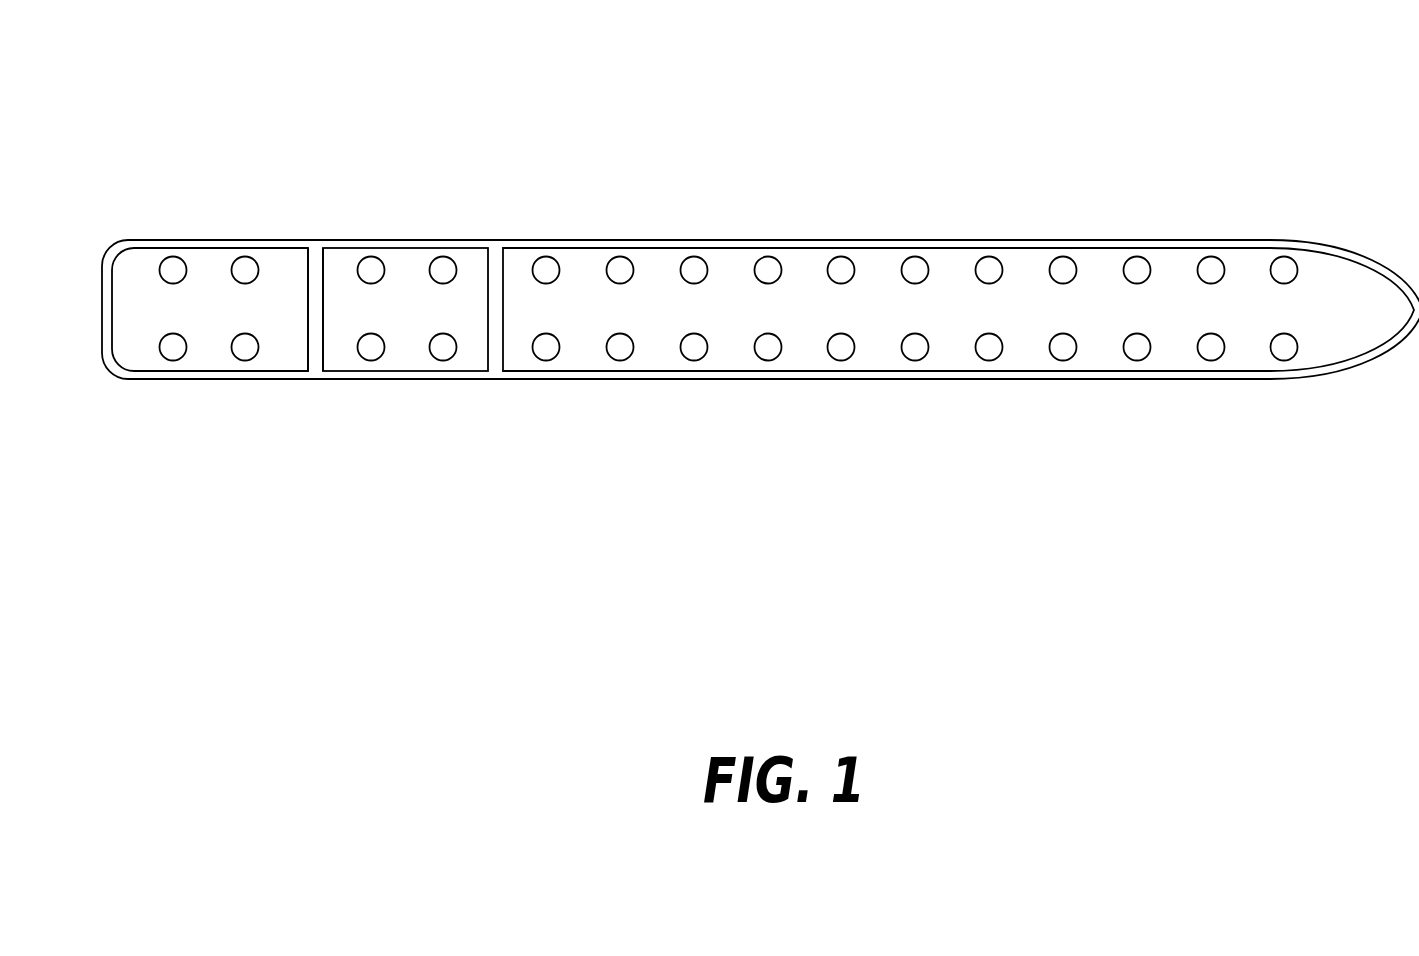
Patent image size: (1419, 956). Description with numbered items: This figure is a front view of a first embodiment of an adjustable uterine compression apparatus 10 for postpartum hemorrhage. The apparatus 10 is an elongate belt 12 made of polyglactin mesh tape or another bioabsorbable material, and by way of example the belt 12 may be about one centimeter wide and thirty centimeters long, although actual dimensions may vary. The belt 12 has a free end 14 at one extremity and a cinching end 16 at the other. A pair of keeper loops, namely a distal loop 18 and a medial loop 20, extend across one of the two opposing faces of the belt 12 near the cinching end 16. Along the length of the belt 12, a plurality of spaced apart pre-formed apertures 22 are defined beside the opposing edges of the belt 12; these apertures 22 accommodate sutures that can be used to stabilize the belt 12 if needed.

The adjustable uterine compression apparatus 10 is at (1228, 188).
The elongate belt 12 is at (737, 242).
The free end 14 is at (1385, 325).
The cinching end 16 is at (282, 352).
The distal loop 18 is at (318, 258).
The medial loop 20 is at (497, 255).
The pre-formed apertures 22 is at (913, 258).